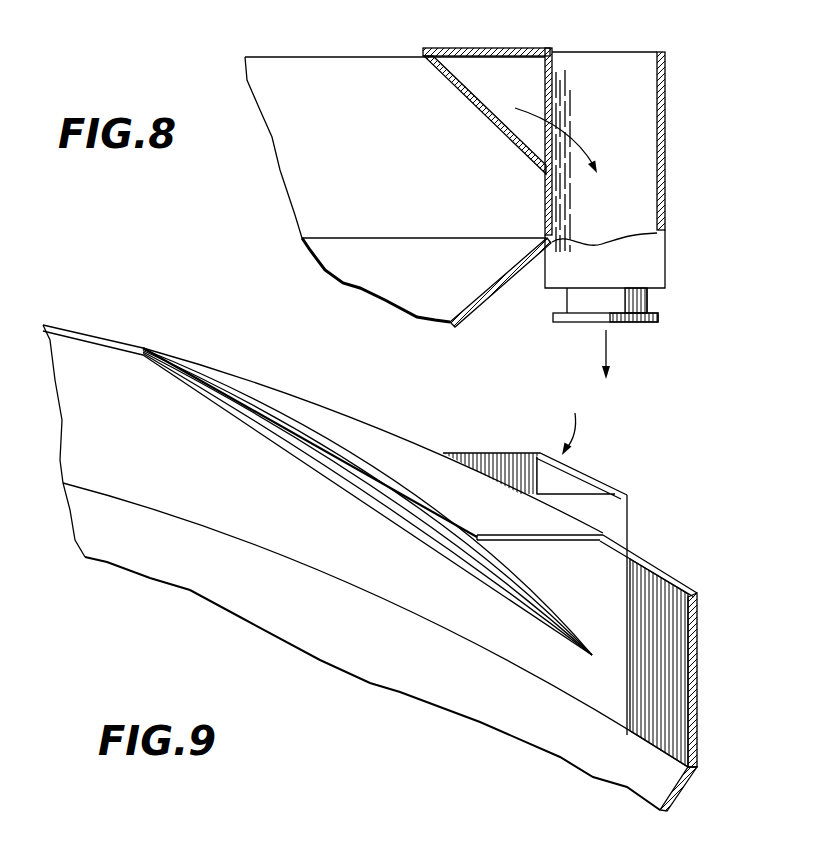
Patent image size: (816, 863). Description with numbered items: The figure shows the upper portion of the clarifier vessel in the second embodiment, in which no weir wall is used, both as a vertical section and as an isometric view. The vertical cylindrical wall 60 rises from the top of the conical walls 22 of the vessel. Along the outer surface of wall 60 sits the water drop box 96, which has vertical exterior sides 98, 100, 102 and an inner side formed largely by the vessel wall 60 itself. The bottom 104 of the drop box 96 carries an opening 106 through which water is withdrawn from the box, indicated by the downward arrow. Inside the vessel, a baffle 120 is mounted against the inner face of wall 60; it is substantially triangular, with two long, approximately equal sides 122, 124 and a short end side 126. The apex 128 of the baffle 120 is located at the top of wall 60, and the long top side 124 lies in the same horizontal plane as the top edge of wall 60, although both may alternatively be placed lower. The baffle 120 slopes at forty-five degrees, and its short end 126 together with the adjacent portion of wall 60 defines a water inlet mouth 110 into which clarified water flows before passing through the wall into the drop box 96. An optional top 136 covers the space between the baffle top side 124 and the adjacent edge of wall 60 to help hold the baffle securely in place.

In FIG. 8, the walls 22 is at (469, 311).
In FIG. 9, the walls 22 is at (165, 558).
In FIG. 8, the vertical cylindrical wall 60 is at (312, 72).
In FIG. 9, the vertical cylindrical wall 60 is at (695, 661).
In FIG. 8, the water drop box 96 is at (680, 104).
In FIG. 9, the water drop box 96 is at (572, 421).
In FIG. 8, the vertical exterior side 98 is at (620, 62).
In FIG. 9, the vertical exterior side 98 is at (484, 452).
In FIG. 8, the vertical exterior side 100 is at (665, 156).
In FIG. 9, the vertical exterior side 100 is at (582, 473).
In FIG. 8, the vertical exterior side 102 is at (648, 258).
In FIG. 9, the vertical exterior side 102 is at (622, 525).
In FIG. 8, the bottom 104 is at (646, 299).
In FIG. 8, the opening 106 is at (648, 336).
In FIG. 9, the water inlet mouth 110 is at (594, 582).
In FIG. 8, the baffle 120 is at (470, 124).
In FIG. 9, the baffle 120 is at (438, 562).
In FIG. 9, the long side 122 is at (375, 507).
In FIG. 9, the long top side 124 is at (330, 465).
In FIG. 9, the short end side 126 is at (552, 613).
In FIG. 9, the apex 128 is at (140, 348).
In FIG. 8, the top 136 is at (479, 48).
In FIG. 9, the top 136 is at (362, 432).